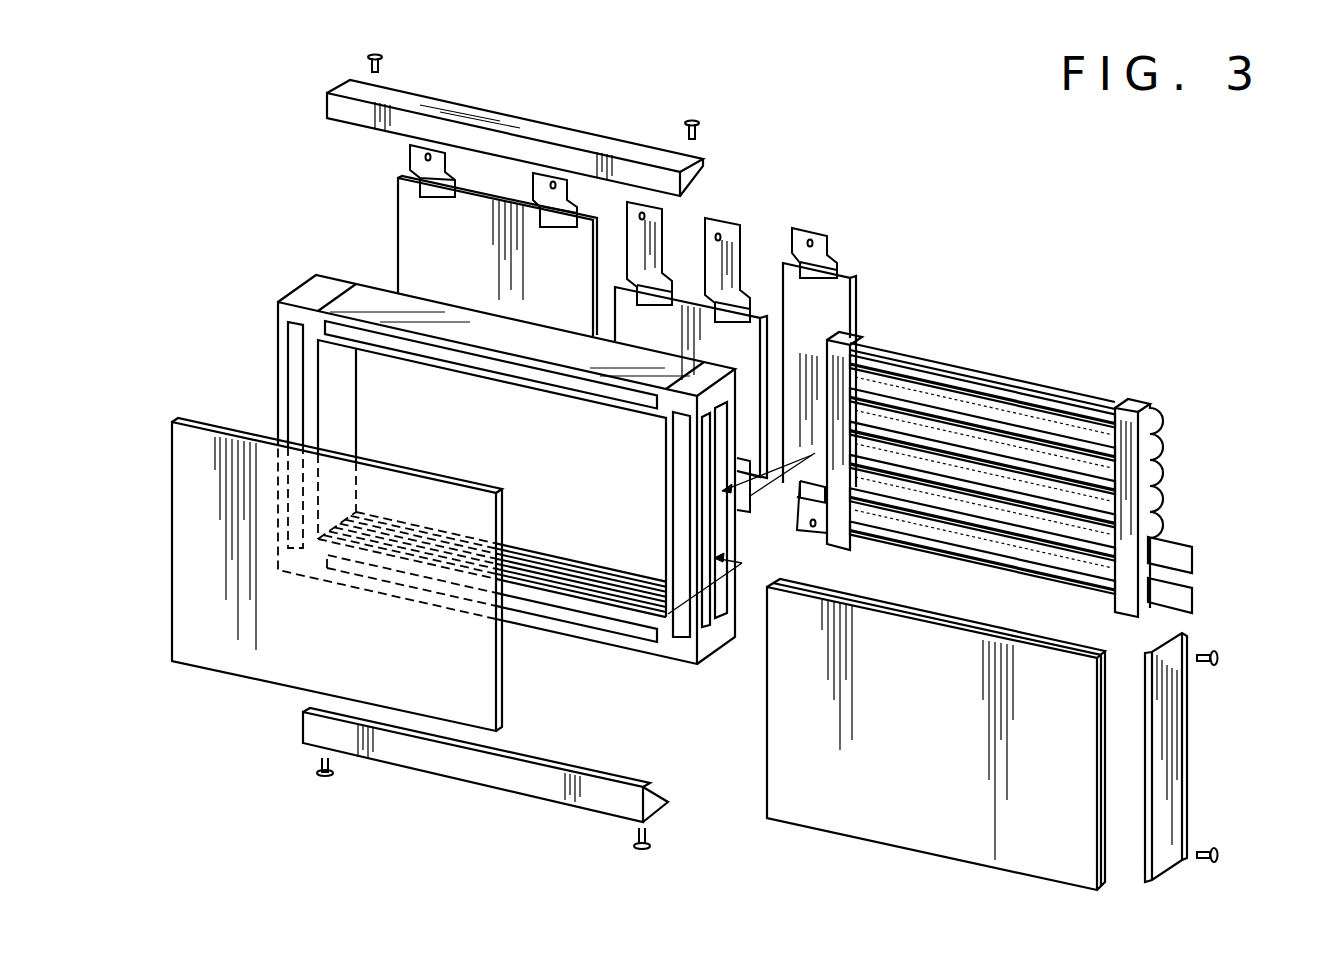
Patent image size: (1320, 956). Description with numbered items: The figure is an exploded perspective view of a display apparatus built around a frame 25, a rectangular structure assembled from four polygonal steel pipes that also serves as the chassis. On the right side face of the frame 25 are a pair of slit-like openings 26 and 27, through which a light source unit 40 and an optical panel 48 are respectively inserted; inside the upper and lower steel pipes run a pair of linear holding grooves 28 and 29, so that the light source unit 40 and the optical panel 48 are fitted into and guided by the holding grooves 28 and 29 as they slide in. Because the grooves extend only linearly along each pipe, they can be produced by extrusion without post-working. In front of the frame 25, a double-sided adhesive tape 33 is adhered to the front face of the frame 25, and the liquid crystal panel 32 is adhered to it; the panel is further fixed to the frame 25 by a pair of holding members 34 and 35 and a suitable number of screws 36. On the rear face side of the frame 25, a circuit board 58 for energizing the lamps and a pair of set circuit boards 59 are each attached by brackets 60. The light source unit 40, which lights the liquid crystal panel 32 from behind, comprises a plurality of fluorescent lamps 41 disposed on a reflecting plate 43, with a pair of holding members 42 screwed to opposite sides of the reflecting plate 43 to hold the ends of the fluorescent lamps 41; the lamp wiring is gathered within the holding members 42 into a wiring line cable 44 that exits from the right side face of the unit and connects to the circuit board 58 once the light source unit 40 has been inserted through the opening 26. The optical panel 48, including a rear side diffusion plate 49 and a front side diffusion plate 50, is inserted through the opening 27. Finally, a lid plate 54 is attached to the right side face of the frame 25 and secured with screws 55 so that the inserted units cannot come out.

The frame 25 is at (368, 300).
The slit-like opening 26 is at (720, 535).
The slit-like opening 27 is at (718, 612).
The holding groove 28 is at (533, 566).
The holding groove 29 is at (596, 590).
The liquid crystal panel 32 is at (206, 655).
The double-sided adhesive tape 33 is at (295, 336).
The holding member 34 is at (545, 131).
The holding member 35 is at (468, 770).
The screws 36 is at (383, 62).
The light source unit 40 is at (1049, 447).
The fluorescent lamps 41 is at (1033, 430).
The holding members 42 is at (837, 363).
The reflecting plate 43 is at (1097, 402).
The wiring line cable 44 is at (1195, 558).
The optical panel 48 is at (882, 734).
The rear side diffusion plate 49 is at (1105, 703).
The front side diffusion plate 50 is at (875, 833).
The lid plate 54 is at (1182, 760).
The screws 55 is at (1222, 660).
The circuit board 58 is at (840, 300).
The set circuit boards 59 is at (405, 203).
The brackets 60 is at (555, 212).